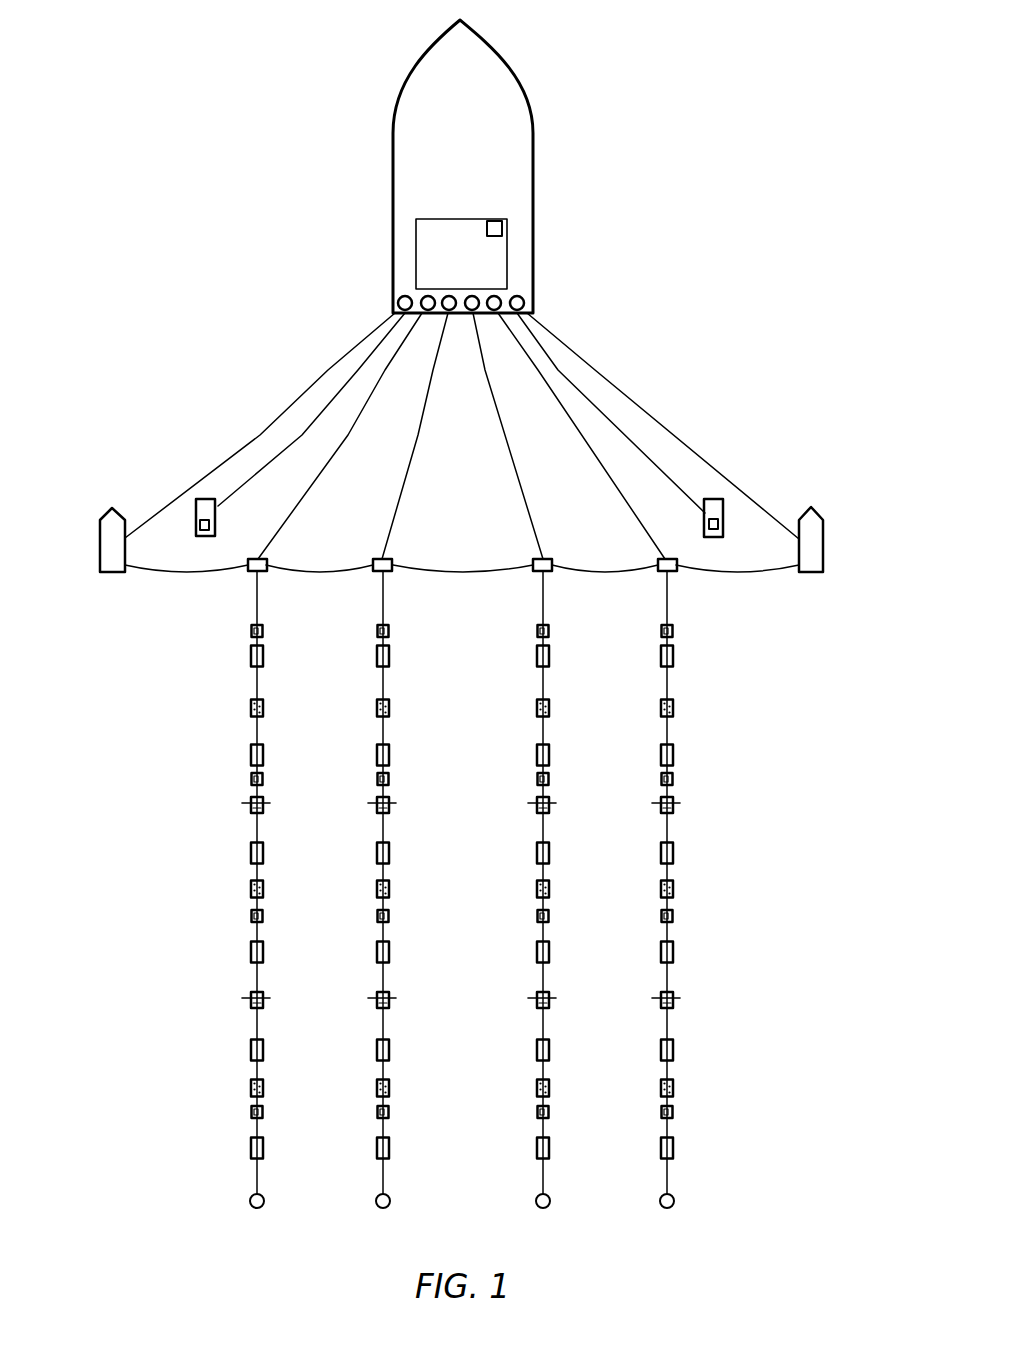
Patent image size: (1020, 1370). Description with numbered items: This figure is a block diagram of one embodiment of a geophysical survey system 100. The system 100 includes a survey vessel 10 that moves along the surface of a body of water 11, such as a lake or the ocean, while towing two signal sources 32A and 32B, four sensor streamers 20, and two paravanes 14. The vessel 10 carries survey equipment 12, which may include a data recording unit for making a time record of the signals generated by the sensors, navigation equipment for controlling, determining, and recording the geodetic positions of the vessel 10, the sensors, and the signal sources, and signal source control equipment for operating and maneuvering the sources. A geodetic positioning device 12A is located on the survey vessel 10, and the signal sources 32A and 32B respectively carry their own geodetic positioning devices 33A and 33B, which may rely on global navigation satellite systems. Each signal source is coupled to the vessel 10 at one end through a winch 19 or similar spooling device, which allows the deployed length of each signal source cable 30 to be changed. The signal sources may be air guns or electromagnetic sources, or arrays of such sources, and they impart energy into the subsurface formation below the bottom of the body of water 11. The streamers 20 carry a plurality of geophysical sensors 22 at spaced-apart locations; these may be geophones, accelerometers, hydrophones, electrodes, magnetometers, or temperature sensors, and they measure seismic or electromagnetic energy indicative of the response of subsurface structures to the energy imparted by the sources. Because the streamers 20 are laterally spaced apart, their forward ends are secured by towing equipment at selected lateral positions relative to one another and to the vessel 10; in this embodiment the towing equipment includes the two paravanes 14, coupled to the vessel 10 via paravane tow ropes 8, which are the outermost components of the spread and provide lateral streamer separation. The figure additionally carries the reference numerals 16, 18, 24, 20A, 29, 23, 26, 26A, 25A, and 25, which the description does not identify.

The geophysical survey system 100 is at (174, 68).
The survey vessel 10 is at (478, 149).
The body of water 11 is at (791, 185).
The survey equipment 12 is at (493, 219).
The geodetic positioning device 12A is at (500, 227).
The winch 19 is at (398, 303).
The paravane tow ropes 8 is at (291, 405).
The signal source cable 30 is at (360, 372).
The lead-in cables 16 is at (279, 531).
The lead-in cables 18 is at (404, 483).
The paravanes 14 is at (100, 548).
The signal source 32A is at (205, 499).
The signal source 32B is at (715, 499).
The geodetic positioning device 33A is at (196, 527).
The geodetic positioning device 33B is at (722, 527).
The spreader rope 24 is at (431, 570).
The streamer front end 20A is at (376, 558).
The streamers 20 is at (257, 601).
The streamer position sensors 29 is at (389, 631).
The geophysical sensors 22 is at (389, 656).
The acoustic positioning devices 23 is at (389, 708).
The lateral steering devices 26 is at (391, 800).
The steering device sensor 26A is at (390, 809).
The tail buoy 25A is at (390, 1201).
The streamer tail end 25 is at (382, 1208).